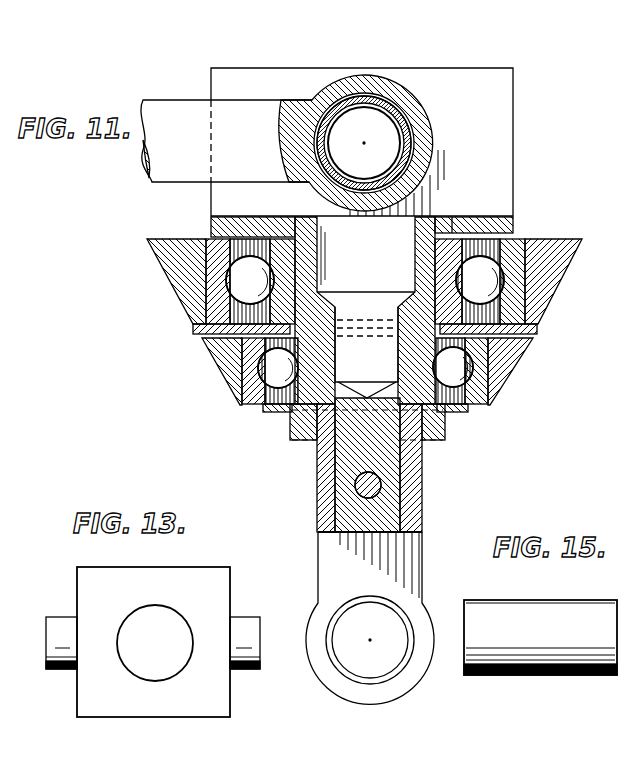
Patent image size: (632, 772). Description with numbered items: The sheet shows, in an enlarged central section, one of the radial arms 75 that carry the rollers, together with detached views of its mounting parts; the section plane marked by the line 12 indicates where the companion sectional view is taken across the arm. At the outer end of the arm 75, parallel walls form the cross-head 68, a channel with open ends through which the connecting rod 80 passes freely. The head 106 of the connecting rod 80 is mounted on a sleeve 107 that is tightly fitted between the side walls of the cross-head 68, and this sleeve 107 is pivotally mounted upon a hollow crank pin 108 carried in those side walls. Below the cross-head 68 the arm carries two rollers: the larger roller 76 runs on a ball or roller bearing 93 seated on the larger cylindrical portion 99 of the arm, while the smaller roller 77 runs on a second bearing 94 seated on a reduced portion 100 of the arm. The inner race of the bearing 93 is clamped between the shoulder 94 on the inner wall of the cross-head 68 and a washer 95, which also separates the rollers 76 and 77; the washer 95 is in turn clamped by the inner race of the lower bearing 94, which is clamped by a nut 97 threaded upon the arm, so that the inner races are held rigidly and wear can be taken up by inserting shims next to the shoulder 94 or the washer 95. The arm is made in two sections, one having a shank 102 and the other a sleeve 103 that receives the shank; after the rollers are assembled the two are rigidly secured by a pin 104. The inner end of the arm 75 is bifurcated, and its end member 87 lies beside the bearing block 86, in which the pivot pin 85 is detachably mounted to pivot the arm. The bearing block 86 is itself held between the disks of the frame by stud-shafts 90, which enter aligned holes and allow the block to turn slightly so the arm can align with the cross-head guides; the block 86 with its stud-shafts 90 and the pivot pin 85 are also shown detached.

In FIG. 11, the axis / center line 12 is at (363, 128).
In FIG. 11, the cross-head 68 is at (214, 196).
In FIG. 11, the connecting rod 80 is at (182, 104).
In FIG. 11, the head of the connecting rod 106 is at (391, 93).
In FIG. 11, the sleeve 107 is at (411, 102).
In FIG. 11, the hollow crank pin 108 is at (399, 139).
In FIG. 11, the ball or roller bearing of the smaller roller / shoulder 94 is at (455, 219).
In FIG. 11, the larger roller 76 is at (166, 265).
In FIG. 11, the ball or roller bearing of the larger roller 93 is at (216, 241).
In FIG. 11, the washer 95 is at (512, 335).
In FIG. 11, the smaller roller 77 is at (222, 366).
In FIG. 11, the larger cylindrical portion of the radial arm 99 is at (425, 270).
In FIG. 11, the reduced portion of the arm 100 is at (281, 411).
In FIG. 11, the nut 97 is at (297, 441).
In FIG. 11, the radial arm 75 is at (318, 503).
In FIG. 11, the sleeve 103 is at (423, 469).
In FIG. 11, the shank 102 is at (389, 502).
In FIG. 11, the pin 104 is at (380, 487).
In FIG. 11, the end member of the bifurcated portion of the arm 87 is at (326, 557).
In FIG. 13, the bearing block 86 is at (209, 573).
In FIG. 13, the stud-shaft 90 is at (63, 620).
In FIG. 15, the pivot pin 85 is at (494, 608).